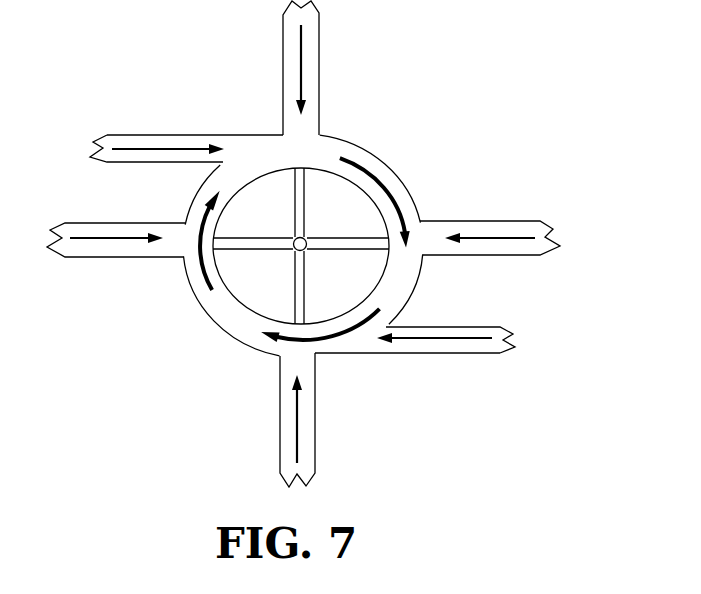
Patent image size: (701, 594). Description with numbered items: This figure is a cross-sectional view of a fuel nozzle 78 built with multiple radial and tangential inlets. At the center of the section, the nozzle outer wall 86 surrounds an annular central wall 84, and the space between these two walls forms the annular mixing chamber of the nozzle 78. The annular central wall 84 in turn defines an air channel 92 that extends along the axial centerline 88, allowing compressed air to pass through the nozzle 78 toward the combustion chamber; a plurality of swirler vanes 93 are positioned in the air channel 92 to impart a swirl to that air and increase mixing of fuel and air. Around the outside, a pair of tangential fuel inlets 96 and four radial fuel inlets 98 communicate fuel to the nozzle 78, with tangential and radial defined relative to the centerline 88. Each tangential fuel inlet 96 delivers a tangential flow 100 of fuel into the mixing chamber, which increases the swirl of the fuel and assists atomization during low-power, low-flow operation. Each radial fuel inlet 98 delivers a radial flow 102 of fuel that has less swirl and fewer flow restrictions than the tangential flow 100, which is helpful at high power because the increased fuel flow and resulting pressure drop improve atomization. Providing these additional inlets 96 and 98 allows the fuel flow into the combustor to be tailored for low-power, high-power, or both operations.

The fuel nozzle 78 is at (460, 52).
The annular central wall 84 is at (240, 300).
The nozzle outer wall 86 is at (192, 296).
The axial centerline 88 is at (301, 243).
The air channel 92 is at (327, 188).
The swirler vanes 93 is at (369, 246).
The tangential fuel inlet 96 is at (248, 137).
The radial fuel inlet 98 is at (300, 130).
The tangential flow 100 is at (146, 149).
The radial flow 102 is at (303, 68).